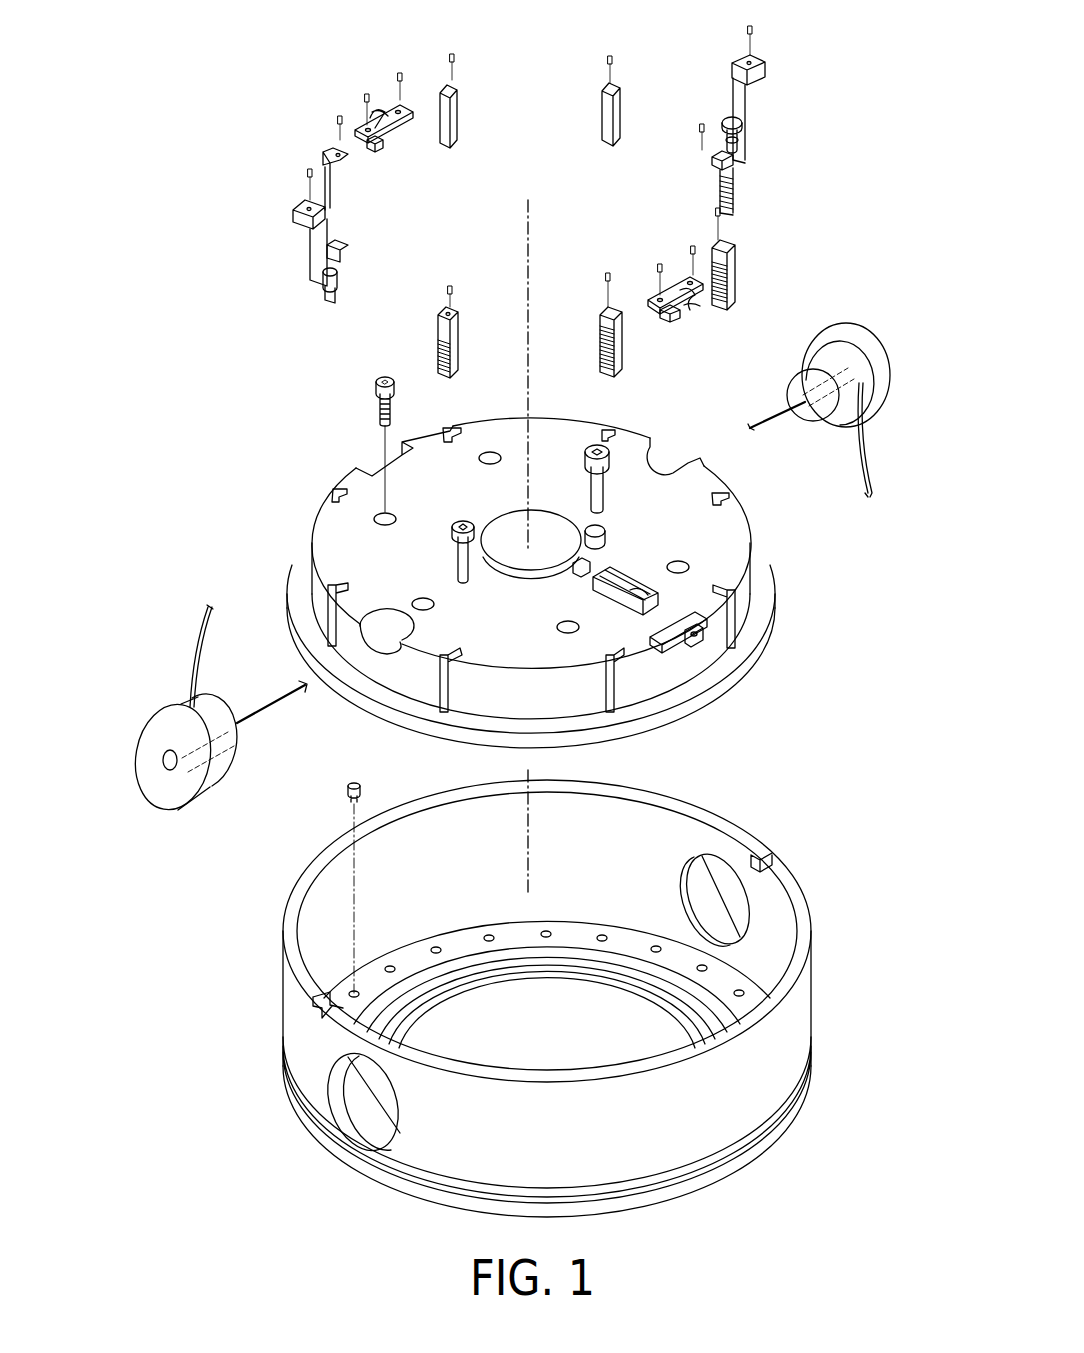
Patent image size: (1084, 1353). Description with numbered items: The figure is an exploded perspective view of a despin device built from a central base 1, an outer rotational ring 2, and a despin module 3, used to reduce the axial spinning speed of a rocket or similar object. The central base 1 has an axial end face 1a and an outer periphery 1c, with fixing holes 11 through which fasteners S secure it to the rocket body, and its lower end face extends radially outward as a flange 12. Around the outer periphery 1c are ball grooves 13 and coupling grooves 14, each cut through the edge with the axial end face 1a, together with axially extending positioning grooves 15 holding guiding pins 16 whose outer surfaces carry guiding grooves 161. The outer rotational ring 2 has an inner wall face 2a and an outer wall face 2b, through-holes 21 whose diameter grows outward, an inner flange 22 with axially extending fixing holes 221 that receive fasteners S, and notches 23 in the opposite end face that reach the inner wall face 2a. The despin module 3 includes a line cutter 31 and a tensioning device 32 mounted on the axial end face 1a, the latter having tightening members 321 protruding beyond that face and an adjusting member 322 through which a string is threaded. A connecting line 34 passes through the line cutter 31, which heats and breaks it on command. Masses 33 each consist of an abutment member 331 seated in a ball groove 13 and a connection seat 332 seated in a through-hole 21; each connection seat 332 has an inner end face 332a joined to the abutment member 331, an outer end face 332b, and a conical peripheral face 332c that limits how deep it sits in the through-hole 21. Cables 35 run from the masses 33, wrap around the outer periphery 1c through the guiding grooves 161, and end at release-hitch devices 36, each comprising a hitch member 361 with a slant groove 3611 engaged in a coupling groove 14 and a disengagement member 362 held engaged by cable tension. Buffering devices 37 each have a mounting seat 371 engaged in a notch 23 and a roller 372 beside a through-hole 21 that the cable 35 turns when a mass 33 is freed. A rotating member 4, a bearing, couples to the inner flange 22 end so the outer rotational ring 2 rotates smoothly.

The central base 1 is at (546, 635).
The fixing holes 11 is at (380, 518).
The flange 12 is at (763, 607).
The ball grooves 13 is at (690, 449).
The coupling grooves 14 is at (687, 650).
The positioning grooves 15 is at (737, 620).
The guiding pins 16 is at (454, 328).
The guiding grooves 161 is at (453, 358).
The axial end face 1a is at (440, 455).
The outer periphery 1c is at (316, 584).
The outer rotational ring 2 is at (545, 1008).
The through-holes 21 is at (721, 872).
The inner flange 22 is at (480, 973).
The fixing holes 221 is at (393, 966).
The notches 23 is at (323, 1010).
The inner wall face 2a is at (768, 923).
The outer wall face 2b is at (575, 1008).
The despin module 3 is at (514, 463).
The line cutter 31 is at (588, 525).
The tensioning device 32 is at (646, 475).
The tightening members 321 is at (597, 477).
The adjusting member 322 is at (623, 563).
The masses 33 is at (514, 549).
The abutment member 331 is at (812, 370).
The connection seat 332 is at (513, 577).
The inner end face 332a is at (225, 767).
The outer end face 332b is at (163, 787).
The peripheral face 332c is at (220, 773).
The connecting line 34 is at (770, 425).
The cables 35 is at (872, 453).
The release-hitch devices 36 is at (568, 203).
The hitch member 361 is at (390, 121).
The disengagement member 362 is at (383, 148).
The slant groove 3611 is at (382, 110).
The buffering devices 37 is at (523, 185).
The mounting seat 371 is at (317, 250).
The roller 372 is at (330, 278).
The rotating member 4 is at (697, 1178).
The fasteners S is at (378, 398).